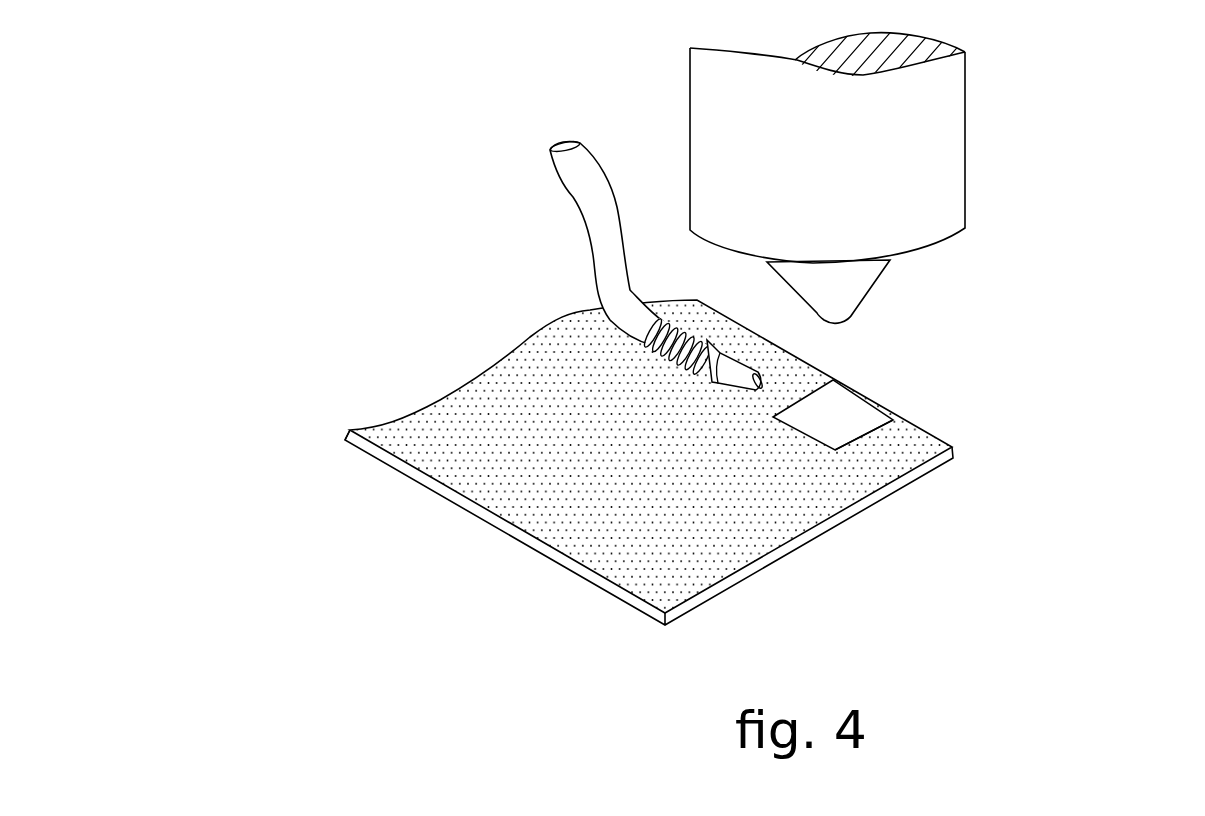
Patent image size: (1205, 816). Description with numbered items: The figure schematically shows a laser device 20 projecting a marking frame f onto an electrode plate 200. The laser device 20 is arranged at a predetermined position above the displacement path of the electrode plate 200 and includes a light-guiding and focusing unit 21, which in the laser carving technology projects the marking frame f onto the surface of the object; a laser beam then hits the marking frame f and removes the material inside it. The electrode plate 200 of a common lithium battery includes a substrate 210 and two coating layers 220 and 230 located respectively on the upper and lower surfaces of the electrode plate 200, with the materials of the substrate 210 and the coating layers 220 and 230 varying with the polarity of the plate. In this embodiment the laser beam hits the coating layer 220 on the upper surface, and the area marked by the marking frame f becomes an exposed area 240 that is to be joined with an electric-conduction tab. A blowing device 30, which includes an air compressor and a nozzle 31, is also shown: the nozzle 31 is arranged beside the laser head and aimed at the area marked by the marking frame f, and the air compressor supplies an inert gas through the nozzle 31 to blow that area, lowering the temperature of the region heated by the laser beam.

The laser device 20 is at (842, 166).
The light-guiding and focusing unit 21 is at (900, 183).
The blowing device 30 is at (520, 264).
The nozzle 31 is at (600, 250).
The electrode plate 200 is at (659, 504).
The substrate 210 is at (336, 441).
The coating layer 220 is at (400, 442).
The coating layer 230 is at (395, 470).
The exposed area 240 is at (850, 402).
The marking frame f is at (853, 453).